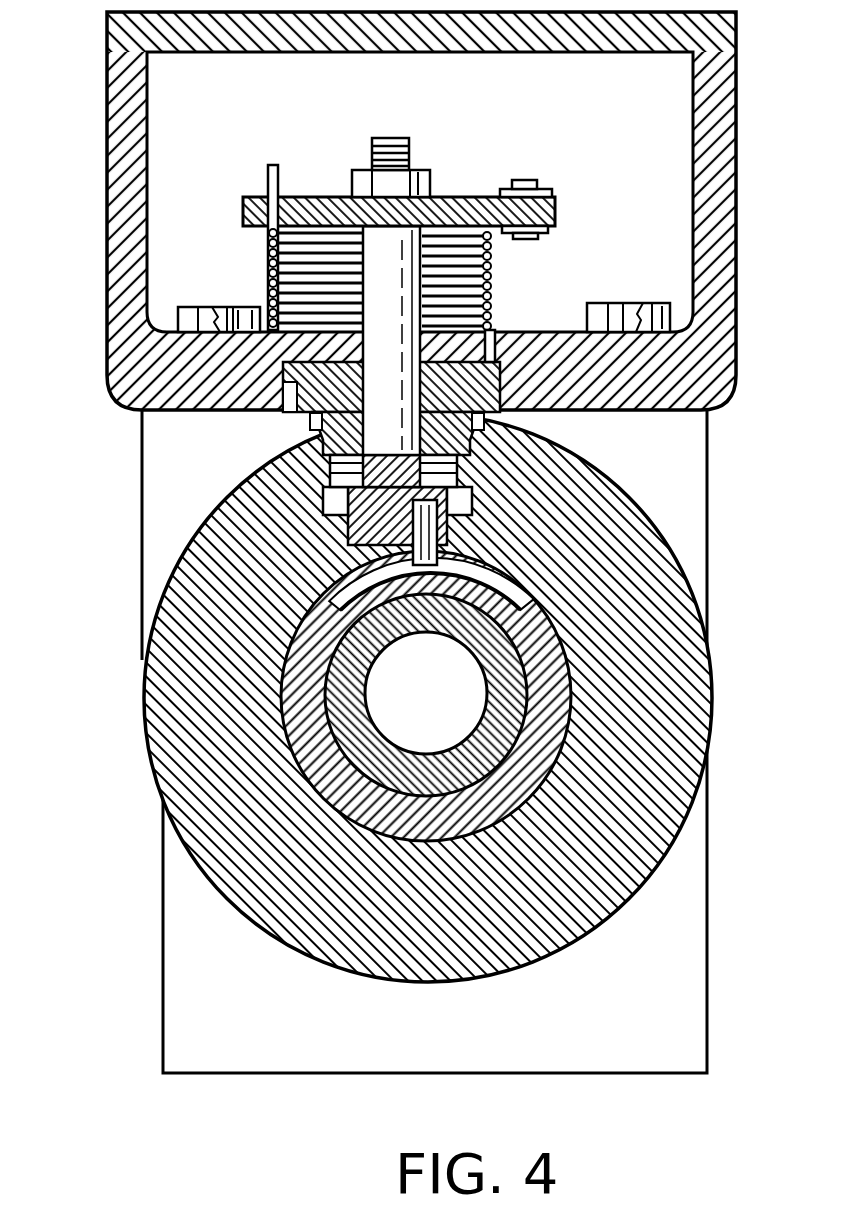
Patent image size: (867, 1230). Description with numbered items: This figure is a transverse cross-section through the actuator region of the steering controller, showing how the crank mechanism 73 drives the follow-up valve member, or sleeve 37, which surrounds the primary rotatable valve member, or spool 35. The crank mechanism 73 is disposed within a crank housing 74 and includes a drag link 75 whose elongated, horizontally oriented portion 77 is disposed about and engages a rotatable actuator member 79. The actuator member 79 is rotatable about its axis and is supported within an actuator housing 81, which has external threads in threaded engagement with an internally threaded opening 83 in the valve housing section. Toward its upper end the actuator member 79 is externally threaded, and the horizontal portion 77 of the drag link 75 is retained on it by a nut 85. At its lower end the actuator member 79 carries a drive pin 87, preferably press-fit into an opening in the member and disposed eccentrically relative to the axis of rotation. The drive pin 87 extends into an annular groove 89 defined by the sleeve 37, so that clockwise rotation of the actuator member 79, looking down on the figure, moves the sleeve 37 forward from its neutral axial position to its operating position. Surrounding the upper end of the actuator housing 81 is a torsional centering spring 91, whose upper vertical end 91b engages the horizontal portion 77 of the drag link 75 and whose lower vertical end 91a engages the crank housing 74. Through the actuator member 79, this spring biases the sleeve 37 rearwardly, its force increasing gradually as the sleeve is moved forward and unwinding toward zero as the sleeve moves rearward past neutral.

The primary rotatable valve member 35 is at (385, 636).
The follow-up valve member 37 is at (318, 778).
The crank mechanism 73 is at (601, 217).
The crank housing 74 is at (122, 190).
The drag link 75 is at (553, 190).
The horizontally oriented portion 77 is at (318, 207).
The actuator member 79 is at (408, 390).
The actuator housing 81 is at (300, 390).
The internally threaded opening 83 is at (470, 452).
The nut 85 is at (432, 175).
The drive pin 87 is at (440, 540).
The annular groove 89 is at (530, 590).
The torsional centering spring 91 is at (491, 288).
The lower vertical end 91a is at (490, 345).
The upper vertical end 91b is at (267, 185).